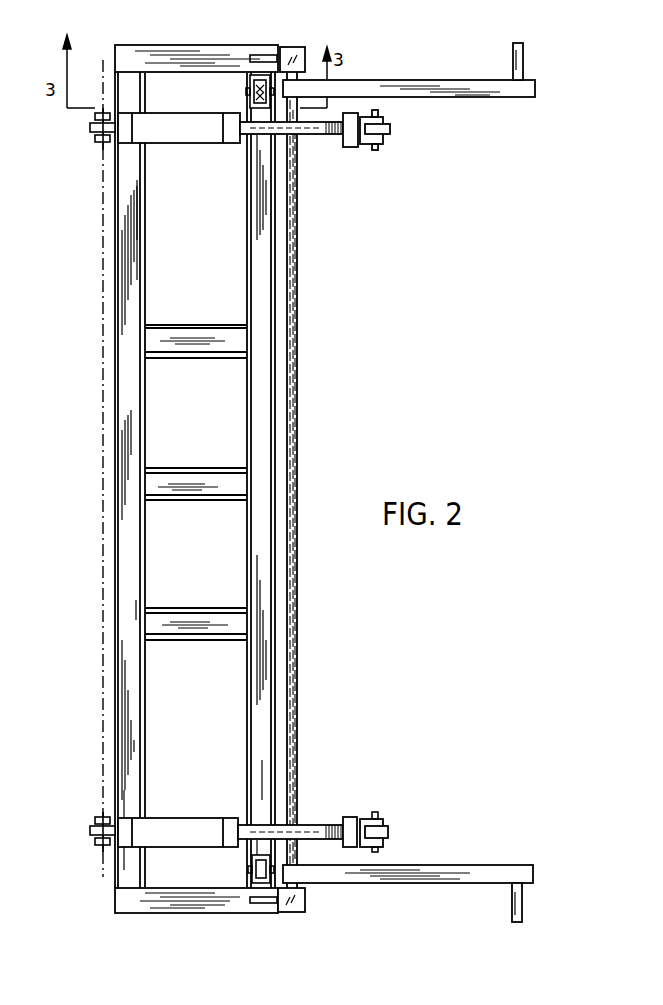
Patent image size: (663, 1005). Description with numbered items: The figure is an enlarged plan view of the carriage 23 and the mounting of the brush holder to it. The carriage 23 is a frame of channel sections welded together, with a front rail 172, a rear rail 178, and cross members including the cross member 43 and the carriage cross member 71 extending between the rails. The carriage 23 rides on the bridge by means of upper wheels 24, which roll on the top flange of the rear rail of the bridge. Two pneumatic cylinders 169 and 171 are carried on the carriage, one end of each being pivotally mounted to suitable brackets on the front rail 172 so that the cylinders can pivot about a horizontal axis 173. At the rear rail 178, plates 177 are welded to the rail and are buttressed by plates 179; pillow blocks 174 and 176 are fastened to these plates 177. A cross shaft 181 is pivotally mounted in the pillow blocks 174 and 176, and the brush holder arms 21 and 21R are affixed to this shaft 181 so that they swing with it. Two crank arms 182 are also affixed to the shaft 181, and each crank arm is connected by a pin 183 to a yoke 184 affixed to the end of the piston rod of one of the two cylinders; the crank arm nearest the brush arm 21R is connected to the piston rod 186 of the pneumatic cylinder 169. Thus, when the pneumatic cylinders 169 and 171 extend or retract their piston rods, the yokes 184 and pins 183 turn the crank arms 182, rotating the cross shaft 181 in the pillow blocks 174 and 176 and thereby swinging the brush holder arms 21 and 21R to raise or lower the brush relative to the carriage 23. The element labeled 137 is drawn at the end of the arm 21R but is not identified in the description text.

The brush holder arm 21 is at (412, 80).
The brush holder arm 21R is at (410, 883).
The carriage 23 is at (98, 398).
The upper wheels 24 is at (248, 100).
The cross member 43 is at (238, 498).
The carriage cross member 71 is at (158, 627).
The post 137 is at (523, 906).
The pneumatic cylinder 169 is at (163, 827).
The pneumatic cylinder 171 is at (172, 143).
The front rail 172 is at (130, 543).
The horizontal axis 173 is at (103, 469).
The pillow block 174 is at (303, 893).
The pillow block 176 is at (290, 47).
The plates 177 is at (281, 48).
The rear rail 178 is at (275, 670).
The plates 179 is at (258, 55).
The cross shaft 181 is at (297, 722).
The crank arms 182 is at (388, 831).
The pin 183 is at (376, 812).
The yoke 184 is at (365, 817).
The piston rod 186 is at (307, 825).